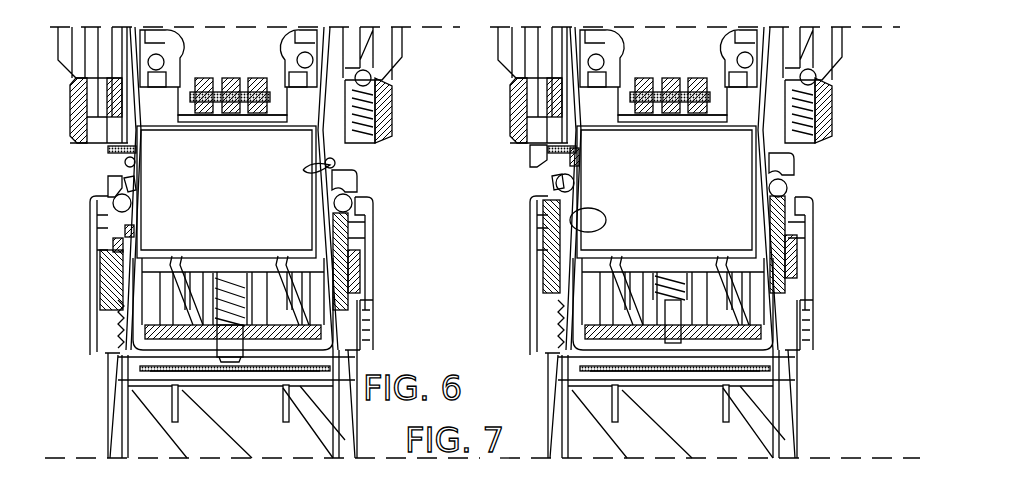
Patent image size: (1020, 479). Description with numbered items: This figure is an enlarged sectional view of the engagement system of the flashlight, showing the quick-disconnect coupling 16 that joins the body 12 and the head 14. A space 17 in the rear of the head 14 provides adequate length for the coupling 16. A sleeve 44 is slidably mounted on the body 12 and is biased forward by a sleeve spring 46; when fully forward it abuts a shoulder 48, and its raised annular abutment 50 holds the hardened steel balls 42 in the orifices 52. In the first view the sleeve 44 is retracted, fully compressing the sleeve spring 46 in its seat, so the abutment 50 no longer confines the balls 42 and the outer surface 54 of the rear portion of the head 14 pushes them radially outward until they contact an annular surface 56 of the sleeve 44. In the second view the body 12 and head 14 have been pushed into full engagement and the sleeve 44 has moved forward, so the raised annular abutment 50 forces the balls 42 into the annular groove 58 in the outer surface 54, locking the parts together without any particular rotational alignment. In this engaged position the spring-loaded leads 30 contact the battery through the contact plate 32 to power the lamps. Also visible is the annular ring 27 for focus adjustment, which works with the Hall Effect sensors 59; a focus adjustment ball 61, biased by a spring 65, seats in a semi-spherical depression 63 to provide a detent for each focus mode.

In FIG. 6, the body 12 is at (353, 367).
In FIG. 7, the body 12 is at (708, 379).
In FIG. 6, the head 14 is at (407, 59).
In FIG. 7, the head 14 is at (704, 85).
In FIG. 6, the quick-disconnect coupling 16 is at (386, 212).
In FIG. 7, the quick-disconnect coupling 16 is at (726, 188).
In FIG. 6, the space 17 is at (335, 162).
In FIG. 7, the space 17 is at (549, 231).
In FIG. 6, the annular ring 27 is at (72, 117).
In FIG. 7, the annular ring 27 is at (503, 110).
In FIG. 6, the spring-loaded leads 30 is at (228, 358).
In FIG. 6, the contact plate 32 is at (158, 371).
In FIG. 7, the contact plate 32 is at (640, 362).
In FIG. 6, the balls 42 is at (131, 204).
In FIG. 7, the balls 42 is at (671, 195).
In FIG. 6, the sleeve 44 is at (369, 307).
In FIG. 7, the sleeve 44 is at (701, 275).
In FIG. 6, the sleeve spring 46 is at (361, 268).
In FIG. 7, the sleeve spring 46 is at (828, 256).
In FIG. 6, the shoulder 48 is at (358, 188).
In FIG. 7, the shoulder 48 is at (824, 165).
In FIG. 6, the raised annular abutment 50 is at (134, 234).
In FIG. 7, the raised annular abutment 50 is at (611, 161).
In FIG. 6, the orifices 52 is at (110, 210).
In FIG. 7, the orifices 52 is at (531, 268).
In FIG. 6, the outer surface 54 is at (349, 250).
In FIG. 7, the outer surface 54 is at (821, 244).
In FIG. 6, the annular surface 56 is at (112, 193).
In FIG. 7, the annular surface 56 is at (517, 153).
In FIG. 6, the annular groove 58 is at (128, 182).
In FIG. 7, the annular groove 58 is at (534, 169).
In FIG. 6, the Hall Effect sensors 59 is at (256, 78).
In FIG. 7, the Hall Effect sensors 59 is at (670, 72).
In FIG. 6, the focus adjustment ball 61 is at (372, 95).
In FIG. 7, the focus adjustment ball 61 is at (843, 111).
In FIG. 6, the semi-spherical depression 63 is at (368, 78).
In FIG. 7, the semi-spherical depression 63 is at (850, 86).
In FIG. 6, the spring 65 is at (372, 123).
In FIG. 7, the spring 65 is at (858, 115).